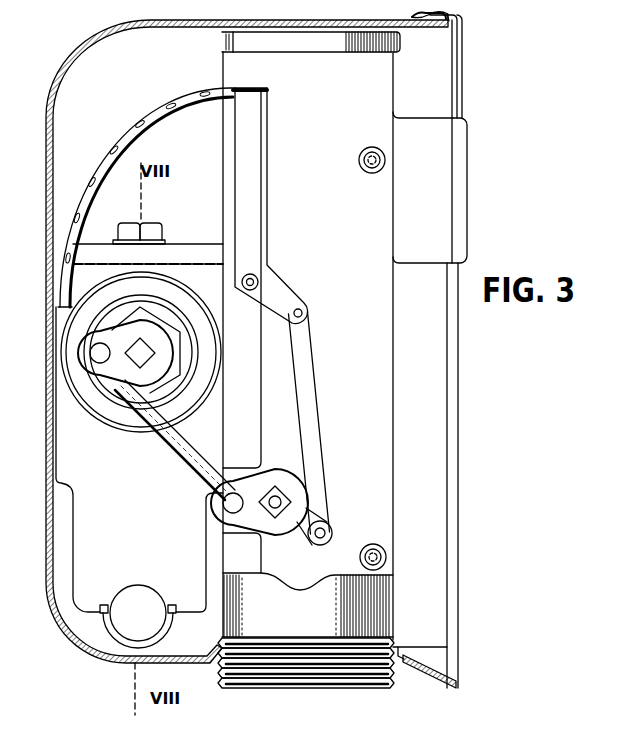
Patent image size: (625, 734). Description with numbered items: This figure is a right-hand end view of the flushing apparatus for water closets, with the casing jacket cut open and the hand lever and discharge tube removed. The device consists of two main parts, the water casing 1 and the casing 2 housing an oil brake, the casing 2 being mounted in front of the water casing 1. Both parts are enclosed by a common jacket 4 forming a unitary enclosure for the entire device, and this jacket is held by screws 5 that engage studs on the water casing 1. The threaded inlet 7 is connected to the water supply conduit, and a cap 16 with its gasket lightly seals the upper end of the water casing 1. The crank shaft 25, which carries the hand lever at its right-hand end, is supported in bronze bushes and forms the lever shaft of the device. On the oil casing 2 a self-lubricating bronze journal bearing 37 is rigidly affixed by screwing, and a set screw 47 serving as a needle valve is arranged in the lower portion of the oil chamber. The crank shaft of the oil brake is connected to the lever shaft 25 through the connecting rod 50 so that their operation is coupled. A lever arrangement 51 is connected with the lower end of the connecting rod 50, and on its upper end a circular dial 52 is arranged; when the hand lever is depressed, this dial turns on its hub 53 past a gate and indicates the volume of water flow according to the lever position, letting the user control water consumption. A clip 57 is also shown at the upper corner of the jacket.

The water casing 1 is at (364, 95).
The casing housing an oil brake 2 is at (68, 418).
The jacket 4 is at (67, 80).
The screws 5 is at (384, 161).
The threaded inlet 7 is at (453, 153).
The cap 16 is at (400, 45).
The crank shaft 25 is at (282, 502).
The journal bearing 37 is at (105, 318).
The set screw 47 is at (130, 615).
The connecting rod 50 is at (165, 438).
The lever arrangement 51 is at (250, 187).
The circular dial 52 is at (106, 156).
The hub 53 is at (259, 282).
The clip 57 is at (440, 28).